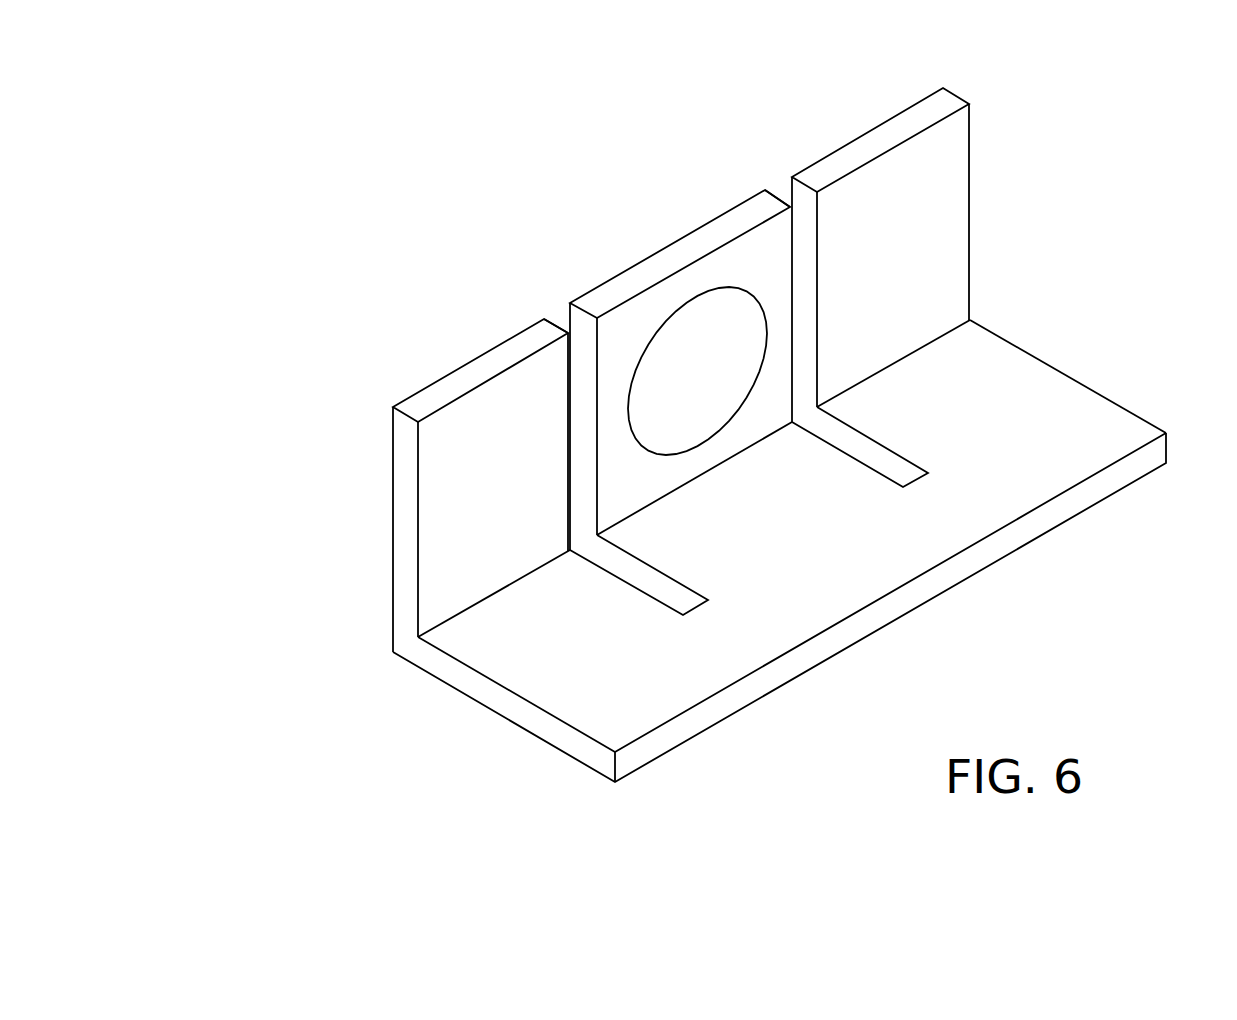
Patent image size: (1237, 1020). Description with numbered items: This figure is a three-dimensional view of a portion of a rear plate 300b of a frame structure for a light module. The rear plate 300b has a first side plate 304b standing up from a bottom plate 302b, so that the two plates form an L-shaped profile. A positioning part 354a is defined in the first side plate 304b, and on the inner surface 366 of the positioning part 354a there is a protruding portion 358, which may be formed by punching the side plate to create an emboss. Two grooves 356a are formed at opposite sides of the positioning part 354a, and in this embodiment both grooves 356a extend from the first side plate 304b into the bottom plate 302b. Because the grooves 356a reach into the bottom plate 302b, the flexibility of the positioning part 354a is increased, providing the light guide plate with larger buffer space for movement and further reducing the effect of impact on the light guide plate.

The rear plate 300b is at (268, 541).
The bottom plate 302b is at (453, 673).
The first side plate 304b is at (402, 543).
The positioning part 354a is at (648, 270).
The grooves 356a is at (558, 310).
The protruding portion 358 is at (737, 390).
The inner surface 366 is at (778, 316).